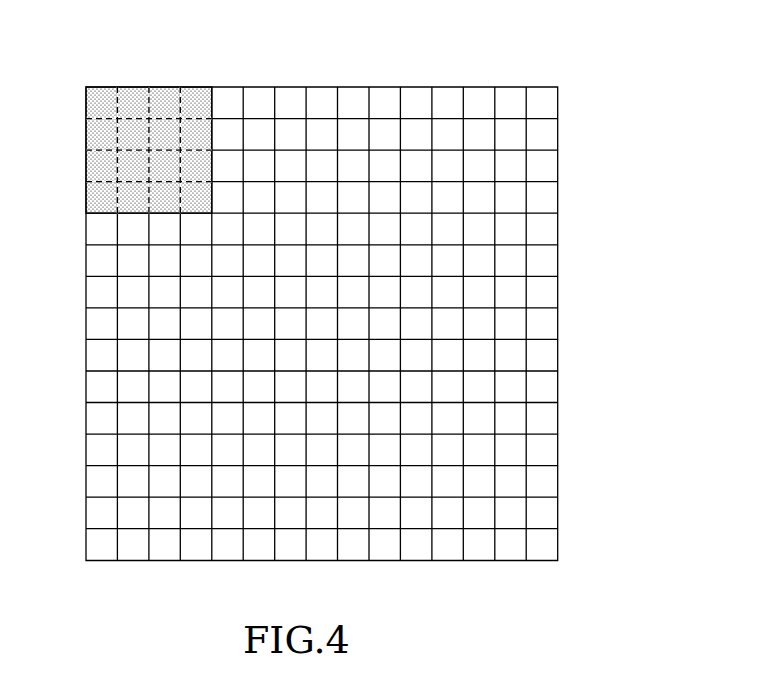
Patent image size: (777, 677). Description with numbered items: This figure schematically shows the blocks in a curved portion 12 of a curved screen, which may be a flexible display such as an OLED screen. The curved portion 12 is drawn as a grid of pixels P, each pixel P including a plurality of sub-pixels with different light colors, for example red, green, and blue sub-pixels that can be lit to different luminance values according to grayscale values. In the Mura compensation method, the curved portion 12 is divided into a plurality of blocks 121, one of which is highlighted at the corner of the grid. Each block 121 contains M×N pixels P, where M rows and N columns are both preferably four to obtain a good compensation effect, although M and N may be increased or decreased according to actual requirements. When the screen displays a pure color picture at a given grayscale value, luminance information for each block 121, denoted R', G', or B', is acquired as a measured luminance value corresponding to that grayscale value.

The curved portion 12 is at (541, 79).
The block 121 is at (86, 87).
The number of pixel columns in block N is at (211, 74).
The number of pixel rows in block M is at (86, 87).
The pixel P is at (103, 199).